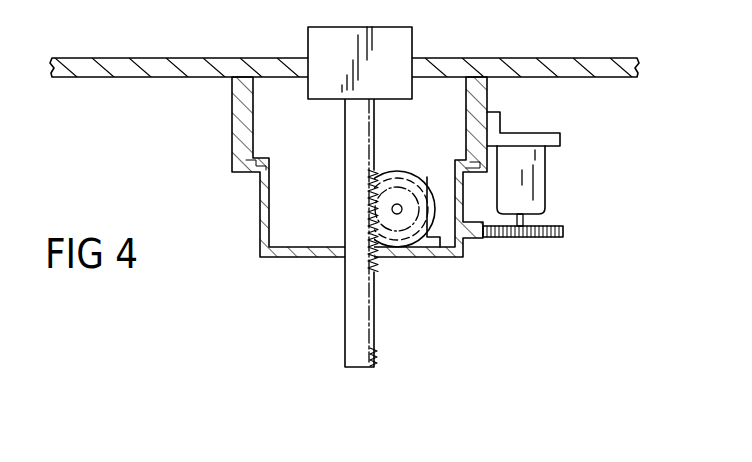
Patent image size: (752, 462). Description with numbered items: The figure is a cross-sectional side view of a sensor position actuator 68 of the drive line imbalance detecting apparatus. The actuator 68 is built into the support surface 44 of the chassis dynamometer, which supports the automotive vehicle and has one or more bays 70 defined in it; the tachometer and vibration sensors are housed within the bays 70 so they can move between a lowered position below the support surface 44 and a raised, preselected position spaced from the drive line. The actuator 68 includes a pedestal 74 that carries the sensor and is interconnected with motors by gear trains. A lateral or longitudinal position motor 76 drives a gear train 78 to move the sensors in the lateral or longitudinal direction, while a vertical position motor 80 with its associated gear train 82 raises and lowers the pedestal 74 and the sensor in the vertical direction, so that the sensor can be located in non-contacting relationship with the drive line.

The support surface 44 is at (607, 70).
The bays 70 is at (249, 104).
The pedestal 74 is at (345, 117).
The lateral position motor 76 is at (545, 176).
The gear train 78 is at (530, 246).
The vertical position motor 80 is at (427, 177).
The gear train 82 is at (350, 214).
The sensor position actuator 68 is at (582, 231).